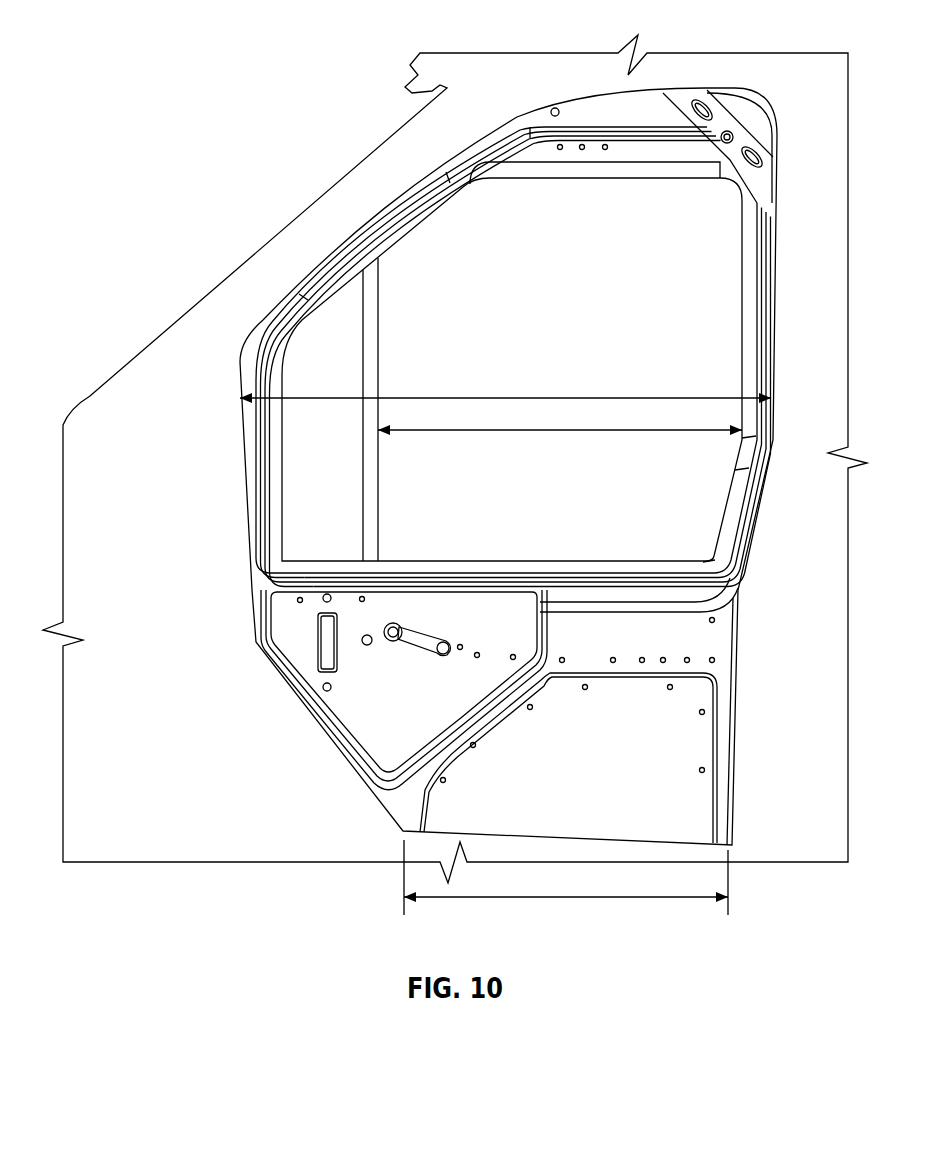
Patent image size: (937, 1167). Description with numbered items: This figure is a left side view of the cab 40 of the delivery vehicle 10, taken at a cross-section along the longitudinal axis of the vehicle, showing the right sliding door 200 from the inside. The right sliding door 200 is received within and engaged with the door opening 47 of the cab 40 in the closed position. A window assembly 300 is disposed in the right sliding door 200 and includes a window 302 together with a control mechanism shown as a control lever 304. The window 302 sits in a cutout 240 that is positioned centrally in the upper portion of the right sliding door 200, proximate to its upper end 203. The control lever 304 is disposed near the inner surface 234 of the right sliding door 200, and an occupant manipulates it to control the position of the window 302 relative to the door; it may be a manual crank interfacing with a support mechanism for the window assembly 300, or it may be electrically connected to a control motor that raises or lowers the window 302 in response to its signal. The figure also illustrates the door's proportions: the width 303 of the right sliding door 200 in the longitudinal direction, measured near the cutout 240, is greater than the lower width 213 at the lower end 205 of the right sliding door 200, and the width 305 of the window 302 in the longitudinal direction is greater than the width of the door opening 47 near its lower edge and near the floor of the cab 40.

The delivery vehicle 10 is at (250, 112).
The cab 40 is at (134, 400).
The door opening 47 is at (242, 368).
The right sliding door 200 is at (645, 116).
The upper end 203 is at (588, 93).
The lower end 205 is at (641, 828).
The lower width 213 is at (541, 900).
The inner surface 234 is at (567, 660).
The cutout 240 is at (737, 236).
The window assembly 300 is at (438, 246).
The window 302 is at (708, 307).
The width 303 is at (504, 397).
The control lever 304 is at (438, 640).
The width 305 is at (558, 434).